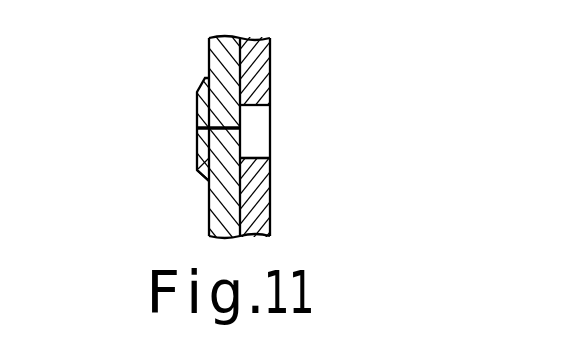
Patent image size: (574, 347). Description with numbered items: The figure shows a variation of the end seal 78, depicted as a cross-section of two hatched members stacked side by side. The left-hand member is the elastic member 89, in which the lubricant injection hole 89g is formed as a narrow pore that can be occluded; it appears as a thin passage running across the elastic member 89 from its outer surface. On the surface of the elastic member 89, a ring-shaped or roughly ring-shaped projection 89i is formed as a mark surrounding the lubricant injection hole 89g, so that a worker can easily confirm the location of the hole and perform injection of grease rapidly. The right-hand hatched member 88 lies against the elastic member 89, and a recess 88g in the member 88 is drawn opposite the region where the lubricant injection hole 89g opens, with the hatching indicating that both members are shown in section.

The end seal 78 is at (193, 50).
The first member 88 is at (253, 80).
The elastic member 89 is at (226, 72).
The lubricant injection hole 89g is at (198, 130).
The ring-shaped projection 89i is at (205, 175).
The groove of first member 88g is at (249, 158).